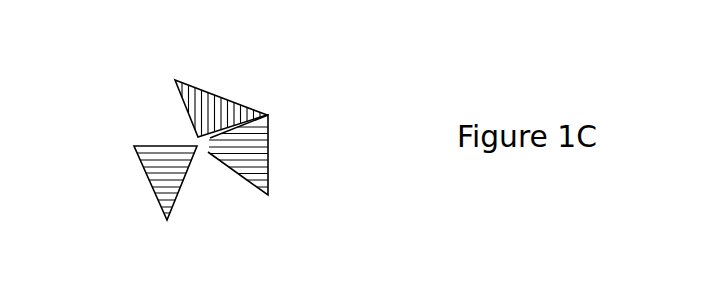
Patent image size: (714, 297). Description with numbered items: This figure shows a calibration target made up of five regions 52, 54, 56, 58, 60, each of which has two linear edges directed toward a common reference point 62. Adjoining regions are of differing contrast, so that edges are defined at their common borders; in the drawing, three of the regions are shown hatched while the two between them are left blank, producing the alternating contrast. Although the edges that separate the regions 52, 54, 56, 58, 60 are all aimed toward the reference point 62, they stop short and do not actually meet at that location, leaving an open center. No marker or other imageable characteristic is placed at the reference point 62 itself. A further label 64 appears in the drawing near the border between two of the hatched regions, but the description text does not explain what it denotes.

The region 52 is at (165, 167).
The region 54 is at (163, 134).
The region 56 is at (212, 108).
The region 58 is at (248, 150).
The region 60 is at (213, 184).
The reference point 62 is at (193, 137).
The overlap region 64 is at (240, 127).